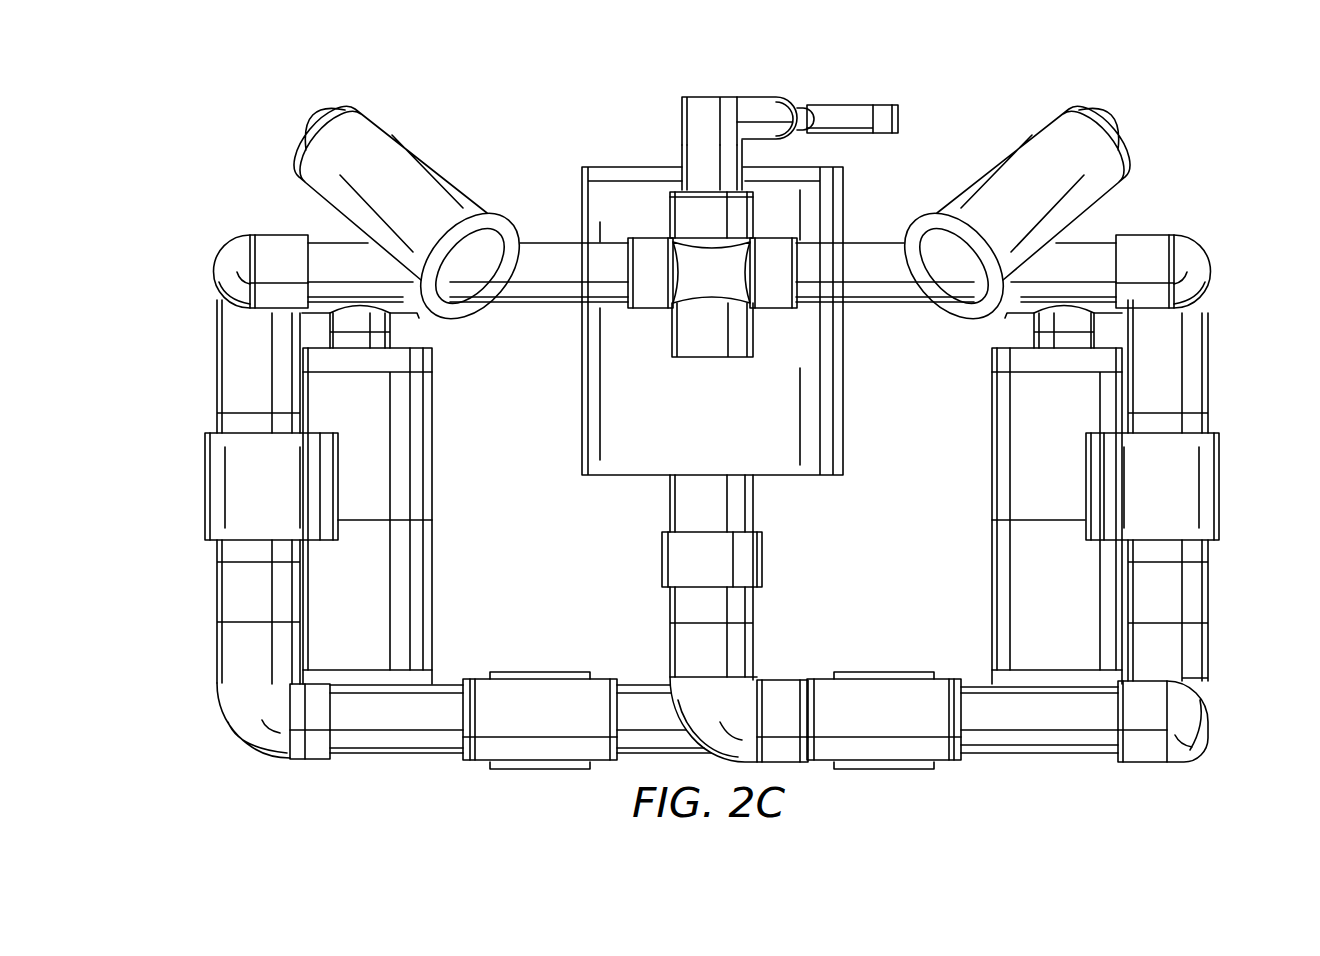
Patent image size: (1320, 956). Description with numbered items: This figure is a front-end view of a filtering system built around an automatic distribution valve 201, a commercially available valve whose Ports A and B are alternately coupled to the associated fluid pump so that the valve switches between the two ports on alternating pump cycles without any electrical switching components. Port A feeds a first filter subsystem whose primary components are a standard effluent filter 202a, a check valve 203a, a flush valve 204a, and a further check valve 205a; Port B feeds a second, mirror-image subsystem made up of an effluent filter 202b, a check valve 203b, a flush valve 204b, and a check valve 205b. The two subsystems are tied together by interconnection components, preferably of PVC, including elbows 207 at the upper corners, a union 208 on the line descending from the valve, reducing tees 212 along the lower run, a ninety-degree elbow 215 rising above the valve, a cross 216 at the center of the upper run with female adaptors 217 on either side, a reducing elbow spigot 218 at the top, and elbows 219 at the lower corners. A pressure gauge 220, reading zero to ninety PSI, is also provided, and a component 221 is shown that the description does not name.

The automatic distribution valve 201 is at (844, 396).
The effluent filter 202a is at (300, 165).
The effluent filter 202b is at (1125, 172).
The check valve 203a is at (205, 488).
The check valve 203b is at (1220, 488).
The flush valve 204a is at (433, 470).
The flush valve 204b is at (991, 472).
The check valve 205a is at (540, 671).
The check valve 205b is at (883, 671).
The elbow 207 is at (215, 264).
The union 208 is at (662, 566).
The reducing tee 212 is at (480, 762).
The 90 degree elbow 215 is at (681, 112).
The cross 216 is at (669, 215).
The female adaptor 217 is at (640, 310).
The reducing elbow spigot 218 is at (795, 96).
The elbow 219 is at (669, 652).
The pressure gauge 220 is at (674, 193).
The handle 221 is at (866, 105).